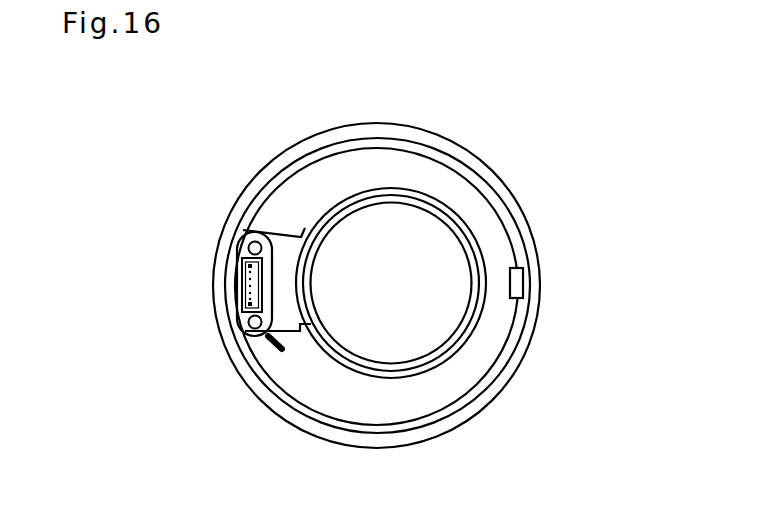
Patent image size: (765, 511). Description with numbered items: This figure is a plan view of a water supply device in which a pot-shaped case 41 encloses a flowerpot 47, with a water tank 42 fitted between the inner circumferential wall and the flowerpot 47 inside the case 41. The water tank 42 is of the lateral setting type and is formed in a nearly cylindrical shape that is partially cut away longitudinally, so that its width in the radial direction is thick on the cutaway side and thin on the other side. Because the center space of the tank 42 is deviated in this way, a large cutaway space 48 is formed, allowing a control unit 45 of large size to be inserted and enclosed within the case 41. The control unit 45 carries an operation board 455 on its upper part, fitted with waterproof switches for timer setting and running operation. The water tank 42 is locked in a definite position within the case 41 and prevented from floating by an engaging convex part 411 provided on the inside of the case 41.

The pot-shaped case 41 is at (284, 146).
The water tank 42 is at (298, 387).
The control unit 45 is at (247, 250).
The operation board 455 is at (243, 281).
The flowerpot 47 is at (318, 221).
The cutaway space 48 is at (277, 284).
The engaging convex part 411 is at (517, 283).